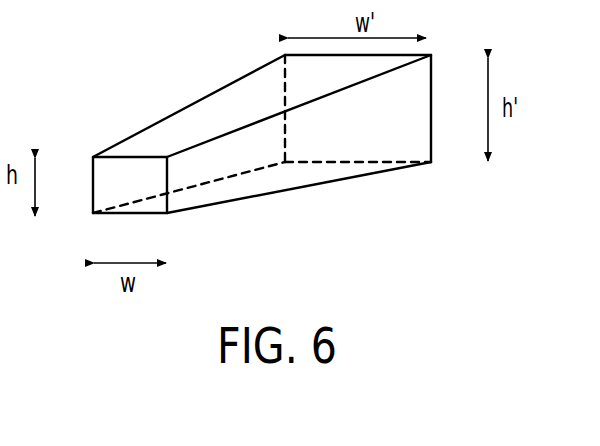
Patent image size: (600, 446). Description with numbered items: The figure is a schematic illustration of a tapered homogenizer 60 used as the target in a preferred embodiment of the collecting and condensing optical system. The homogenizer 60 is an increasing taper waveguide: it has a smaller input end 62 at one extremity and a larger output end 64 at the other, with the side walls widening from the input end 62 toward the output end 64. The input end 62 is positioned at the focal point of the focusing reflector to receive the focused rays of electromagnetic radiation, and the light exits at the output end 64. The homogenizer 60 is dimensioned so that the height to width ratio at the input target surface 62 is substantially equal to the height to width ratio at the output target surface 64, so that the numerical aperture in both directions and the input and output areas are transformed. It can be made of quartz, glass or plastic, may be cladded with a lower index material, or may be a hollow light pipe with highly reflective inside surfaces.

The tapered homogenizer 60 is at (263, 153).
The input end 62 is at (93, 172).
The output end 64 is at (431, 90).